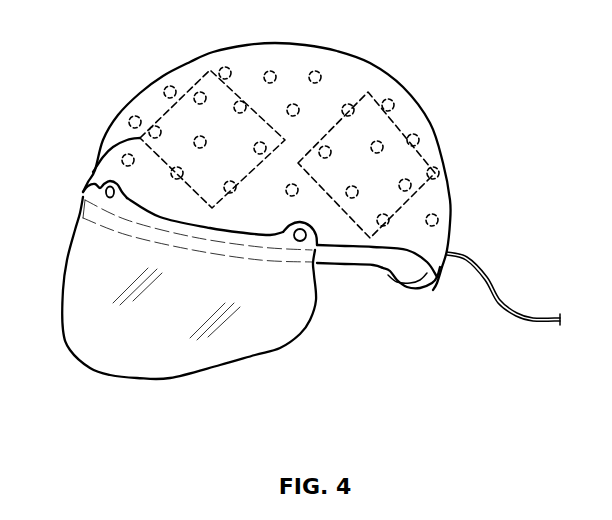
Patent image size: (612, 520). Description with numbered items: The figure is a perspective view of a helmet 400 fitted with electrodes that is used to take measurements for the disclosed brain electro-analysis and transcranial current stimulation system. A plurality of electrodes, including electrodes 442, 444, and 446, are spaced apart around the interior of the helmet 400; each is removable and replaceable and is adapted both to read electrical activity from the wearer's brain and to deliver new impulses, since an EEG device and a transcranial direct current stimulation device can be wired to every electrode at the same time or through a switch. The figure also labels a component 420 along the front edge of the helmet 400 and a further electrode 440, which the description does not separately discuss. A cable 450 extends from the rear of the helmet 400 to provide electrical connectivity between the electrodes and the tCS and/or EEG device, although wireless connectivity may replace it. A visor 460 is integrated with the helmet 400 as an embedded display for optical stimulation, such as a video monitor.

The helmet 400 is at (350, 77).
The front edge of helmet 420 is at (100, 165).
The electrode 440 is at (420, 142).
The electrode 442 is at (353, 109).
The electrode 444 is at (383, 149).
The electrode 446 is at (357, 192).
The cable 450 is at (528, 313).
The visor 460 is at (100, 358).